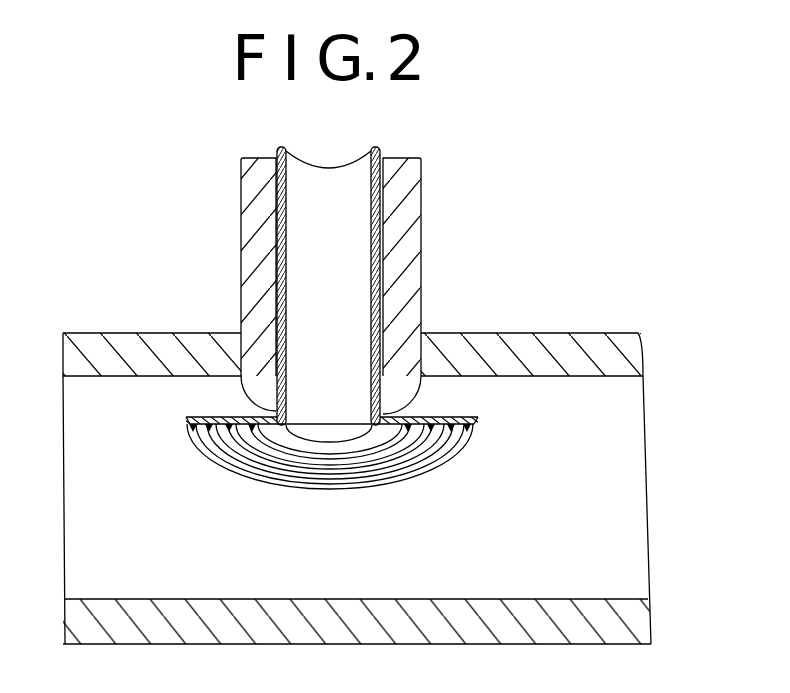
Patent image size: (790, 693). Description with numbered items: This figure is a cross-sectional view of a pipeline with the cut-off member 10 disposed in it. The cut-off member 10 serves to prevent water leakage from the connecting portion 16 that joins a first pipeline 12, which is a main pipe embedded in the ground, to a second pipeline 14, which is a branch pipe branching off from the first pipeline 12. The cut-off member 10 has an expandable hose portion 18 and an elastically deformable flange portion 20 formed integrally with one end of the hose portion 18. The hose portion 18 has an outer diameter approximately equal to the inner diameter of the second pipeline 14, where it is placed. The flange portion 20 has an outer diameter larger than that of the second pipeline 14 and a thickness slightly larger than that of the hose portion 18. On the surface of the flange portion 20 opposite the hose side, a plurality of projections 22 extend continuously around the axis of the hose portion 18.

The cut-off member 10 is at (310, 323).
The first pipeline 12 is at (598, 350).
The second pipeline 14 is at (421, 256).
The connecting portion 16 is at (425, 342).
The hose portion 18 is at (278, 150).
The flange portion 20 is at (187, 430).
The projections 22 is at (193, 440).